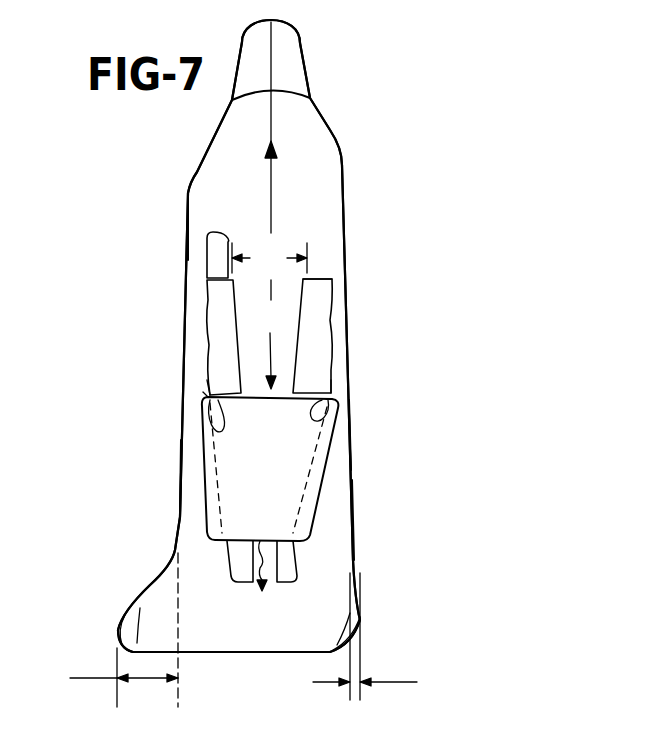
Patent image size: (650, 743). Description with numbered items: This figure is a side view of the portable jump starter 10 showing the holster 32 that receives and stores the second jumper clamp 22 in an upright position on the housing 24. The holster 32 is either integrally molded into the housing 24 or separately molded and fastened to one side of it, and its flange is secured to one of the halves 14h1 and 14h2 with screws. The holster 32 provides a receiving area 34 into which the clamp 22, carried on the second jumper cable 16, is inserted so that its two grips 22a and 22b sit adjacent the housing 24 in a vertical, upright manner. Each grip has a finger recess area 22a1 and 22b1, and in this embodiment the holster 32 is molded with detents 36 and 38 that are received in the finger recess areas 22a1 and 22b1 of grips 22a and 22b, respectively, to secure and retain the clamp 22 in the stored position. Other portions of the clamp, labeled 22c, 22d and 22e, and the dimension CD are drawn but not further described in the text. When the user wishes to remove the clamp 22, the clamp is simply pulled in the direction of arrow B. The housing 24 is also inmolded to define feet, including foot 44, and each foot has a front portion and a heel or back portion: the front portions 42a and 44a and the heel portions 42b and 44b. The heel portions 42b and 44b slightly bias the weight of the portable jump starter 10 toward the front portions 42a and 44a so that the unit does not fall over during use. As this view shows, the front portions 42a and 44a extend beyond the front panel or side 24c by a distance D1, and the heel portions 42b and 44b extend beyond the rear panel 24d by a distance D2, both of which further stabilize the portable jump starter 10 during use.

The portable jump starter 10 is at (403, 205).
The housing 24 is at (343, 181).
The front panel 24c is at (187, 233).
The rear panel 24d is at (355, 510).
The first housing half 14h1 is at (180, 473).
The second housing half 14h2 is at (353, 433).
The second jumper cable 16 is at (207, 258).
The second jumper clamp 22 is at (343, 283).
The grip 22a is at (330, 313).
The finger recess area 22a1 is at (330, 398).
The grip 22b is at (207, 315).
The finger recess area 22b1 is at (207, 393).
The clip bridge 22c is at (313, 410).
The clip left hook 22d is at (207, 438).
The clip bottom seam 22e is at (262, 591).
The holster 32 is at (326, 477).
The receiving area 34 is at (265, 334).
The detent 36 is at (335, 372).
The detent 38 is at (203, 392).
The front portion of foot 42a is at (120, 628).
The heel portion of foot 42b is at (337, 648).
The foot 44 is at (214, 645).
The front portion of foot 44a is at (140, 620).
The heel portion of foot 44b is at (337, 617).
The arrow B is at (270, 175).
The clip distance CD is at (269, 258).
The distance D1 is at (109, 630).
The distance D2 is at (385, 636).